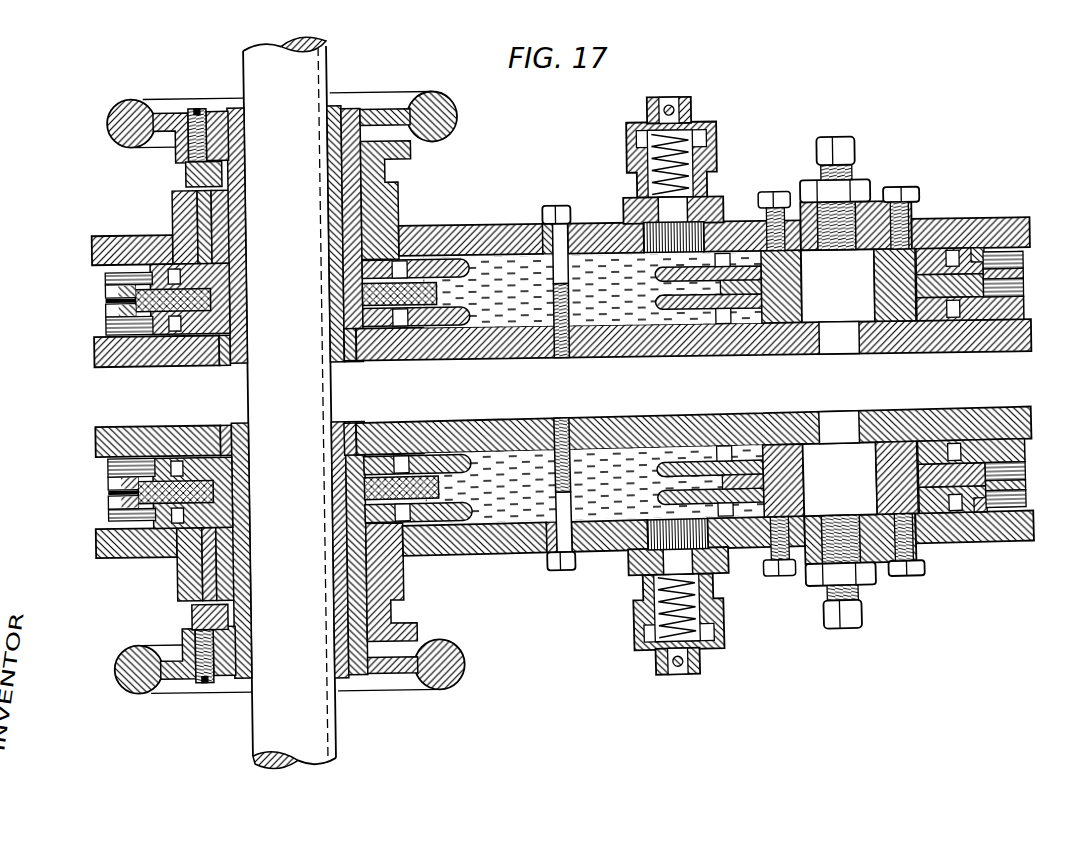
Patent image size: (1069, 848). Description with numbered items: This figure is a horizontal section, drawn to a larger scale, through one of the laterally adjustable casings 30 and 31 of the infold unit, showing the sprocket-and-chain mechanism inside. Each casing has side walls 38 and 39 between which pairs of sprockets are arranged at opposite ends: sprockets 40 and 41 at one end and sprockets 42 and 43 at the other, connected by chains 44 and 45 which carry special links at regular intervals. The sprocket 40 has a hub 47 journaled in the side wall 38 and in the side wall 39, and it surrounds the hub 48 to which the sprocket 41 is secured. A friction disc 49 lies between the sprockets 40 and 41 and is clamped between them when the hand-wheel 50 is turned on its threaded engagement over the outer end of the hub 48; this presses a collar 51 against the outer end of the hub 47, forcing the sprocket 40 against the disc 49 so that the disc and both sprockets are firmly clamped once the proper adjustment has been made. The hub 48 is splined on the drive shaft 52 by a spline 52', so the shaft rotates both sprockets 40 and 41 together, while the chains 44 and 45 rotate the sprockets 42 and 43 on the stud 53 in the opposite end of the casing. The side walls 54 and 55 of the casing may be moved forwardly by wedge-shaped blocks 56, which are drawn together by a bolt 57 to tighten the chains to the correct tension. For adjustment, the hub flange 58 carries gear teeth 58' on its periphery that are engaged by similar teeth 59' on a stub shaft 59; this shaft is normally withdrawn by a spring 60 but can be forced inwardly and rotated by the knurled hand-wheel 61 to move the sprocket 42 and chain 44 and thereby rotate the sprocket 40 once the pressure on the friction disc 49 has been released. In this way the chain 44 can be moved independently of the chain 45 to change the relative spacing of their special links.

The casing 30 is at (400, 591).
The casing 31 is at (400, 200).
The side wall 38 is at (93, 236).
The side wall 39 is at (98, 428).
The sprocket 40 is at (105, 284).
The sprocket 41 is at (104, 313).
The sprocket 42 is at (1020, 266).
The sprocket 43 is at (1012, 297).
The chain 44 is at (105, 275).
The chain 45 is at (107, 326).
The hub 47 is at (216, 210).
The hub 48 is at (240, 107).
The friction disc 49 is at (214, 298).
The hand-wheel 50 is at (113, 122).
The collar 51 is at (188, 176).
The drive shaft 52 is at (304, 402).
The spline 52' is at (362, 397).
The stud 53 is at (865, 452).
The side wall 54 is at (997, 224).
The side wall 55 is at (998, 412).
The wedge-shaped block 56 is at (550, 226).
The bolt 57 is at (563, 208).
The hub flange 58 is at (917, 393).
The gear teeth 58' is at (980, 382).
The stub shaft 59 is at (720, 378).
The teeth 59' is at (700, 385).
The spring 60 is at (694, 123).
The knurled hand-wheel 61 is at (631, 135).